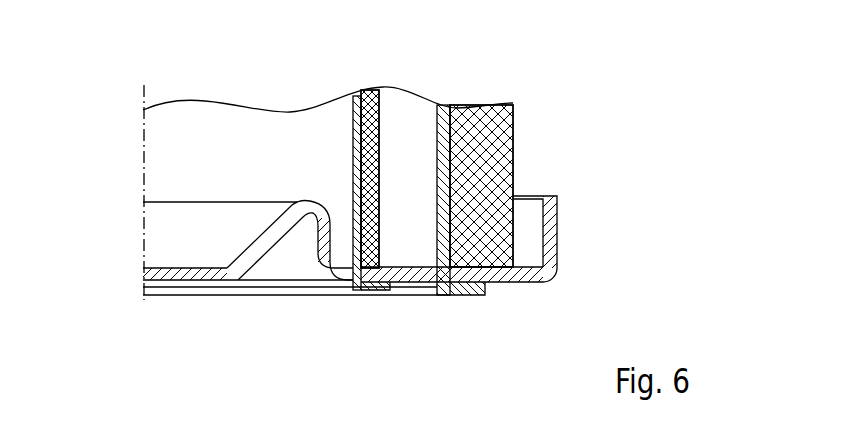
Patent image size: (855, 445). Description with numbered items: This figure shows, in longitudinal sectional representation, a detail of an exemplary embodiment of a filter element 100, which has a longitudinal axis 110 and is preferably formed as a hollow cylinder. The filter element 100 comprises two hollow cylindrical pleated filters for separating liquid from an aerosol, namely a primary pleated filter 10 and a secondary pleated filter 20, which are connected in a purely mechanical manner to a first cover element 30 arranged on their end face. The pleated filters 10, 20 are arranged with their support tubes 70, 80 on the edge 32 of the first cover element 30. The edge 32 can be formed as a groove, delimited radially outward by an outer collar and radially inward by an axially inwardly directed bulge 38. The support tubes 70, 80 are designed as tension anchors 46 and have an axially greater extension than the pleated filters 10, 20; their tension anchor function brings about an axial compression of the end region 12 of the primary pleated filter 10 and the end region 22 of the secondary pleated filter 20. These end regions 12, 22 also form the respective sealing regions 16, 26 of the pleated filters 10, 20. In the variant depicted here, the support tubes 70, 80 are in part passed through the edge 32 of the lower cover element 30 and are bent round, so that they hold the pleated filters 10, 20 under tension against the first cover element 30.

The filter element 100 is at (602, 148).
The longitudinal axis 110 is at (143, 147).
The primary pleated filter 10 is at (482, 105).
The end region 12 is at (475, 289).
The sealing region 16 is at (534, 246).
The secondary pleated filter 20 is at (367, 90).
The end region 22 is at (372, 292).
The sealing region 26 is at (338, 254).
The first cover element 30 is at (197, 297).
The edge 32 is at (516, 283).
The bulge 38 is at (301, 202).
The tension anchor 46 is at (370, 168).
The support tube 70 is at (437, 130).
The support tube 80 is at (353, 130).